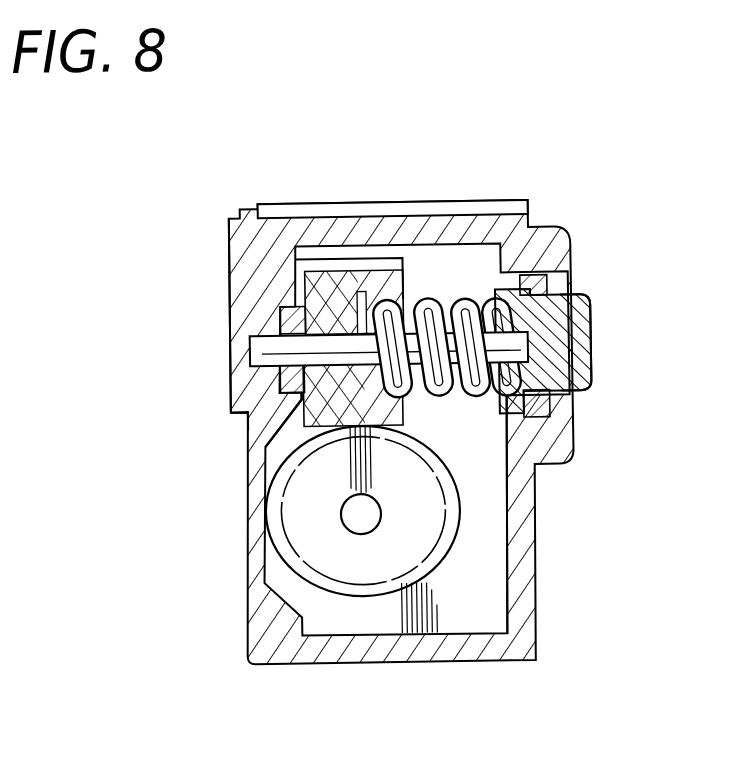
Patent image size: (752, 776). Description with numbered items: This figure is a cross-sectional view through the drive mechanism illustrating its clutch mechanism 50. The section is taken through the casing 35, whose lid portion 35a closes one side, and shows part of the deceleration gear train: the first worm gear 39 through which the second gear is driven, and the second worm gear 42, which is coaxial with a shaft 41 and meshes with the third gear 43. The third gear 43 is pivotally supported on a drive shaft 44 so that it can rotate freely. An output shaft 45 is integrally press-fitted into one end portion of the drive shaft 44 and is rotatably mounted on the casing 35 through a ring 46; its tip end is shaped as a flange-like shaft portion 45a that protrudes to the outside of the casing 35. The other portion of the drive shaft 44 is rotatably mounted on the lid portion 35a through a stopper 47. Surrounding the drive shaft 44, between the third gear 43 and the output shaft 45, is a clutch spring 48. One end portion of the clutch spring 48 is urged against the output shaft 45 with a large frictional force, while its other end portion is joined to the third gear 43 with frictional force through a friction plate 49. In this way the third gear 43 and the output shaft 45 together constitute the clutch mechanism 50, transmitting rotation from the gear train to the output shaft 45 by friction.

The casing 35 is at (503, 224).
The lid portion 35a is at (256, 249).
The first worm gear 39 is at (486, 528).
The shaft 41 is at (360, 518).
The second worm gear 42 is at (291, 531).
The third gear 43 is at (247, 405).
The drive shaft 44 is at (339, 342).
The output shaft 45 is at (597, 338).
The flange-like shaft portion 45a is at (579, 346).
The ring 46 is at (578, 411).
The stopper 47 is at (246, 381).
The clutch spring 48 is at (472, 266).
The friction plate 49 is at (300, 435).
The clutch mechanism 50 is at (422, 288).